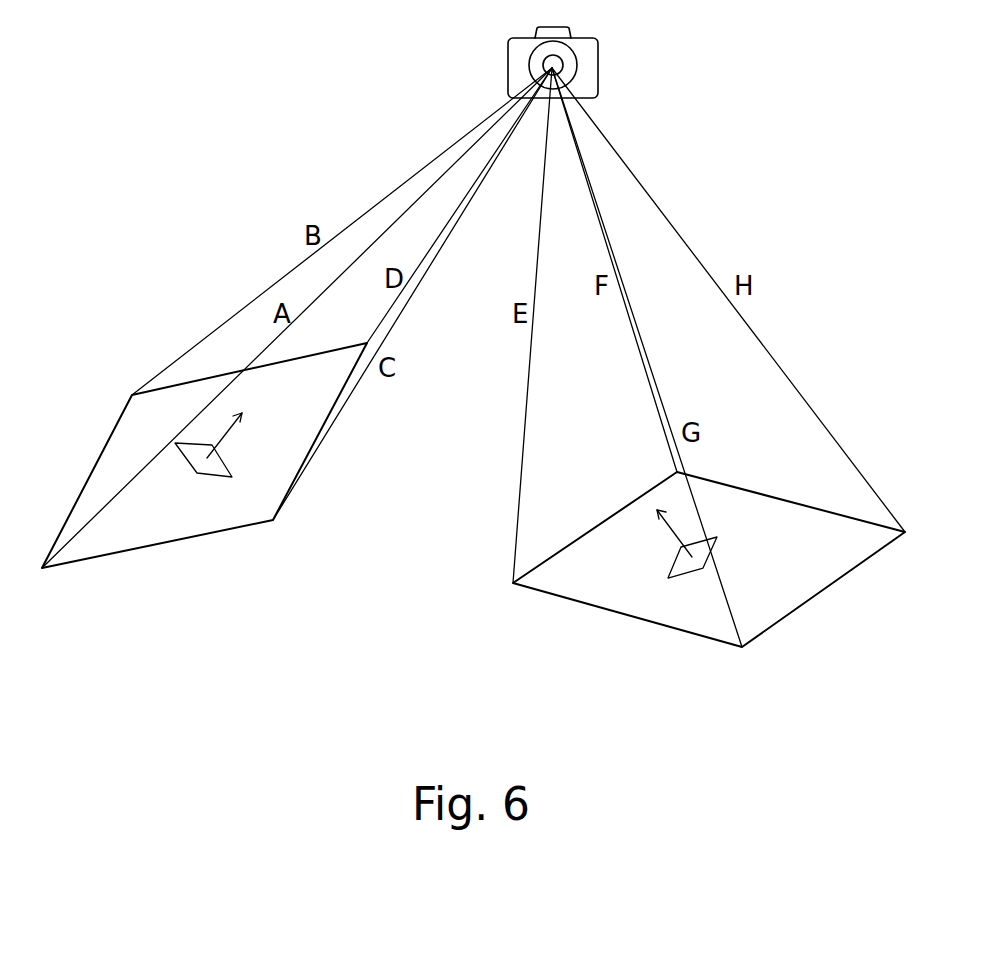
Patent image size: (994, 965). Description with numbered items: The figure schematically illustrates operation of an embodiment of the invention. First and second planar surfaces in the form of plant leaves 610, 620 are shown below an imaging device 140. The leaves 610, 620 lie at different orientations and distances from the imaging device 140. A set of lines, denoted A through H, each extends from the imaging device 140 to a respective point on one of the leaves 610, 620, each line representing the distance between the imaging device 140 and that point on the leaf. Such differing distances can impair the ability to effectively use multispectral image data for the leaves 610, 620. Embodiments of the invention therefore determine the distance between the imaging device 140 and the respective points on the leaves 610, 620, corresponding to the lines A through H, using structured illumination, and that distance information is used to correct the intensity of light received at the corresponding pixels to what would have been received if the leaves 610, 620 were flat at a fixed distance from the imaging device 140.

The imaging device 140 is at (583, 53).
The first plant leaf 610 is at (199, 505).
The second plant leaf 620 is at (590, 575).